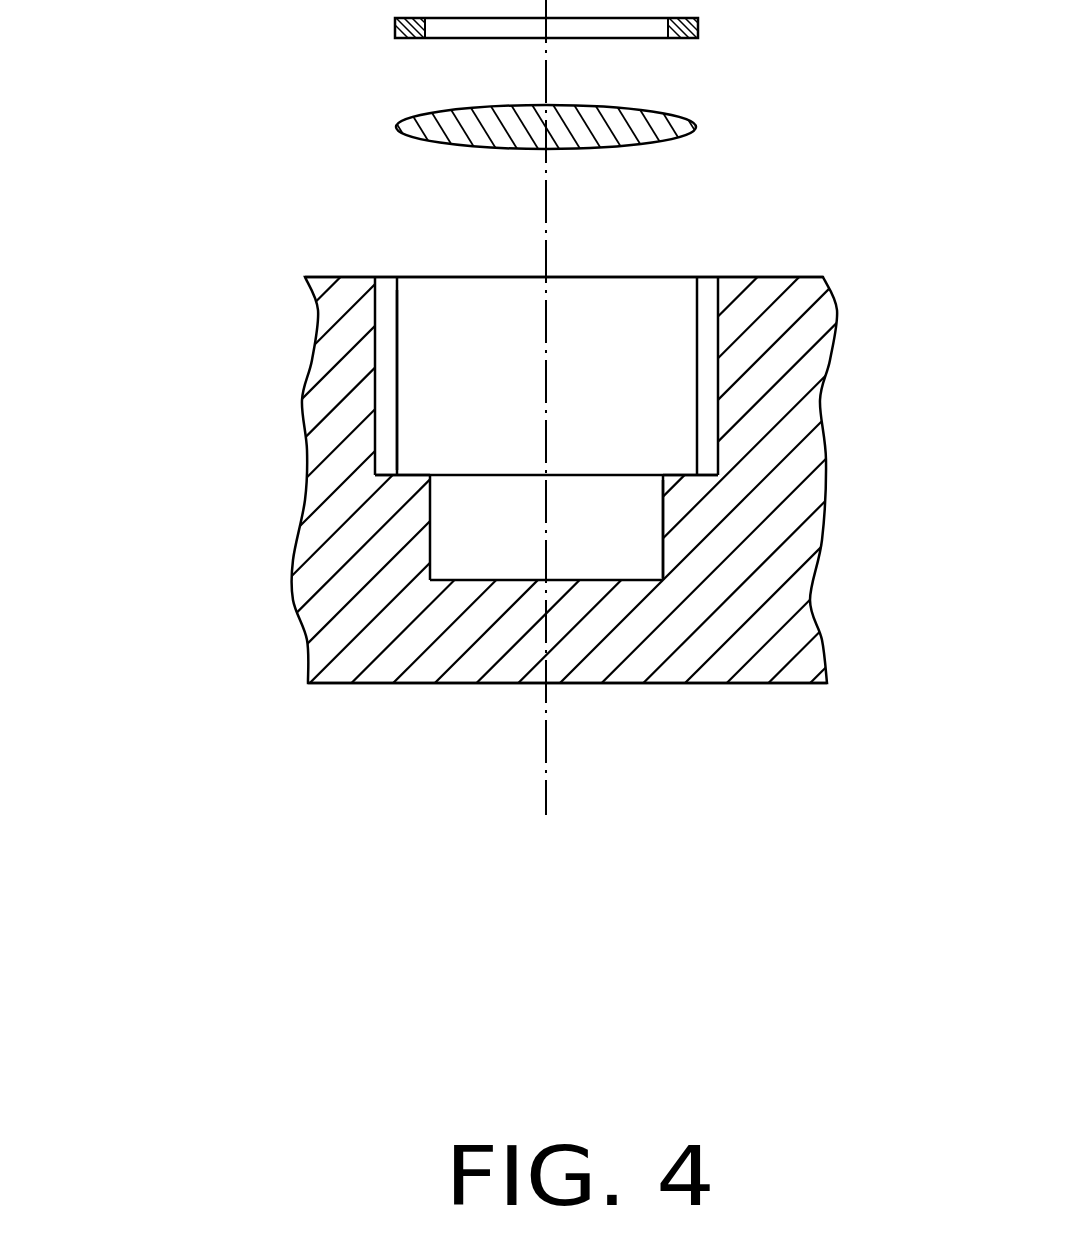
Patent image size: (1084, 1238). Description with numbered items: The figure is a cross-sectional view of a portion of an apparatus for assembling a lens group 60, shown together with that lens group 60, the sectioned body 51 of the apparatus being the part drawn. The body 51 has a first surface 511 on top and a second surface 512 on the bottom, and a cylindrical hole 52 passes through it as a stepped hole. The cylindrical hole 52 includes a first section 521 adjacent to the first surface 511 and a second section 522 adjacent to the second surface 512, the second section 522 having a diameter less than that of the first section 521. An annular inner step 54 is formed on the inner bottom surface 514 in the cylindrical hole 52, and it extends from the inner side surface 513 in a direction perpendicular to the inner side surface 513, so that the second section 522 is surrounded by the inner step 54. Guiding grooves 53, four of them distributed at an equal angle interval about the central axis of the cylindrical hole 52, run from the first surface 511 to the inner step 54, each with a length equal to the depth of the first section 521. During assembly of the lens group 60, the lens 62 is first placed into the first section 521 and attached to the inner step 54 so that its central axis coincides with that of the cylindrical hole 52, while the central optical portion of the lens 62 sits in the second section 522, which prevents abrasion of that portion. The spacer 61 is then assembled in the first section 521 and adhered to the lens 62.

The holder body 51 is at (542, 450).
The cylindrical hole 52 is at (382, 440).
The first section 521 is at (450, 411).
The second section 522 is at (455, 523).
The guiding groove 53 is at (387, 347).
The inner step 54 is at (713, 462).
The lens group 60 is at (613, 89).
The spacer 61 is at (690, 23).
The lens 62 is at (562, 132).
The first surface 511 is at (768, 277).
The second surface 512 is at (752, 685).
The inner side surface 513 is at (408, 375).
The inner bottom surface 514 is at (605, 576).